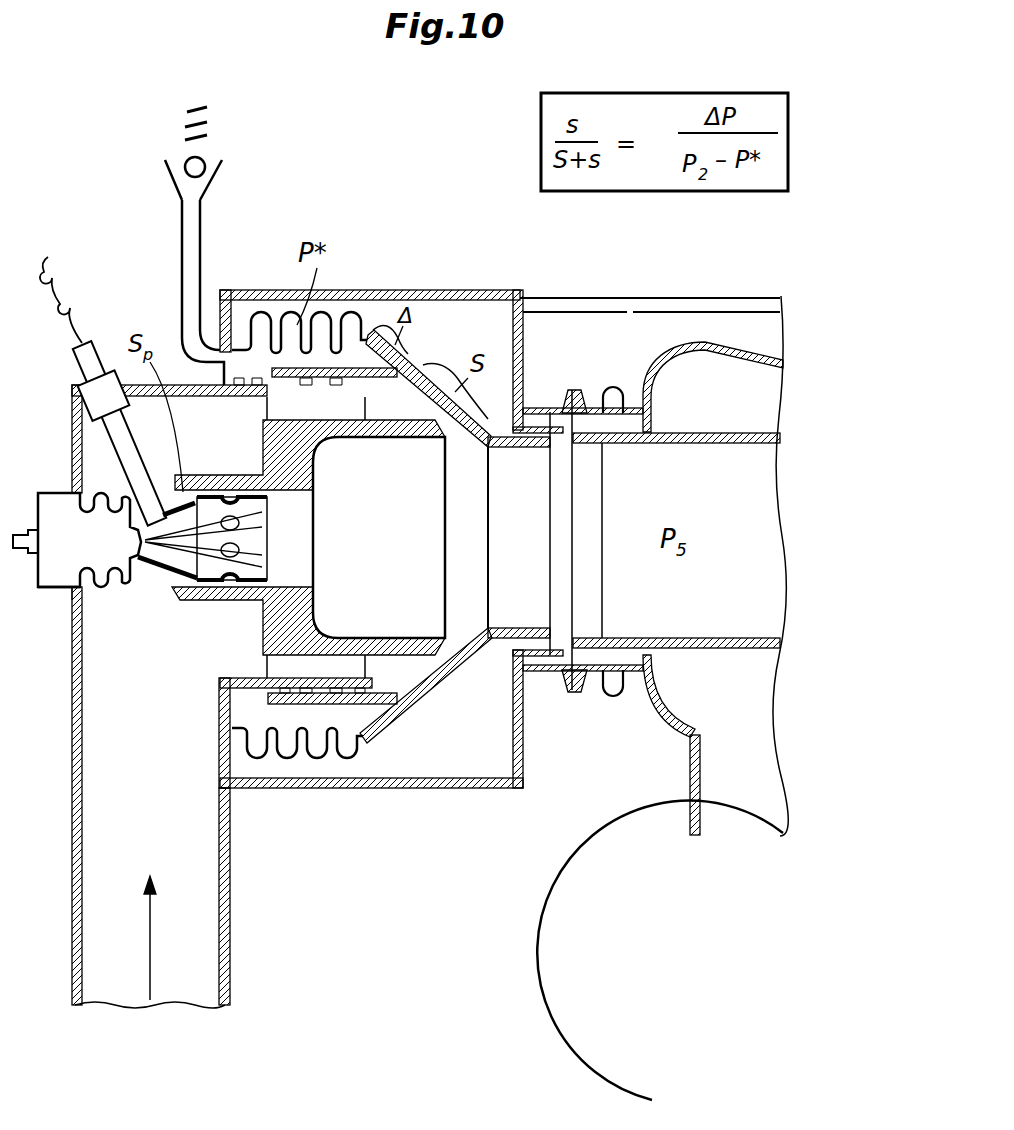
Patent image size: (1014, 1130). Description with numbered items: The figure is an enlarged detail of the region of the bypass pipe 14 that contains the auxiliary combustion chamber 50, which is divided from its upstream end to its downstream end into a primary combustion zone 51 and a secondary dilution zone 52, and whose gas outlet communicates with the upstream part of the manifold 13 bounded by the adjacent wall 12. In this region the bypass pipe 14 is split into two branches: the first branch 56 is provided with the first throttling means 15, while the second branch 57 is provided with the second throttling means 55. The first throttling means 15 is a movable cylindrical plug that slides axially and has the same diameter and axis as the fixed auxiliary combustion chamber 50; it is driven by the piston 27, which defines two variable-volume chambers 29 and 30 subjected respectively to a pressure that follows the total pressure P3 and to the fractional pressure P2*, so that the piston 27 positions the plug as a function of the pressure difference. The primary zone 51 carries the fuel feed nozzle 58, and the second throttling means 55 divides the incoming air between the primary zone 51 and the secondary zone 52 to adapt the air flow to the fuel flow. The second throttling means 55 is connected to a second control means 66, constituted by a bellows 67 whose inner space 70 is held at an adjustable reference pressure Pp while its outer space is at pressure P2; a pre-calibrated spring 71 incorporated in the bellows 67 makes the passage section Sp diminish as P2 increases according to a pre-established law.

The housing wall 12 is at (702, 700).
The manifold 13 is at (708, 587).
The bypass pipe 14 is at (205, 900).
The first throttling means 15 is at (452, 655).
The piston 27 is at (453, 282).
The variable-volume chamber 29 is at (477, 325).
The variable-volume chamber 30 is at (320, 356).
The auxiliary combustion chamber 50 is at (205, 650).
The primary combustion zone 51 is at (362, 563).
The secondary dilution zone 52 is at (480, 568).
The second throttling means 55 is at (180, 600).
The first branch 56 is at (392, 673).
The second branch 57 is at (156, 583).
The fuel feed nozzle 58 is at (20, 527).
The second control means 66 is at (100, 608).
The bellows 67 is at (97, 590).
The inner space 70 is at (55, 585).
The spring 71 is at (95, 490).